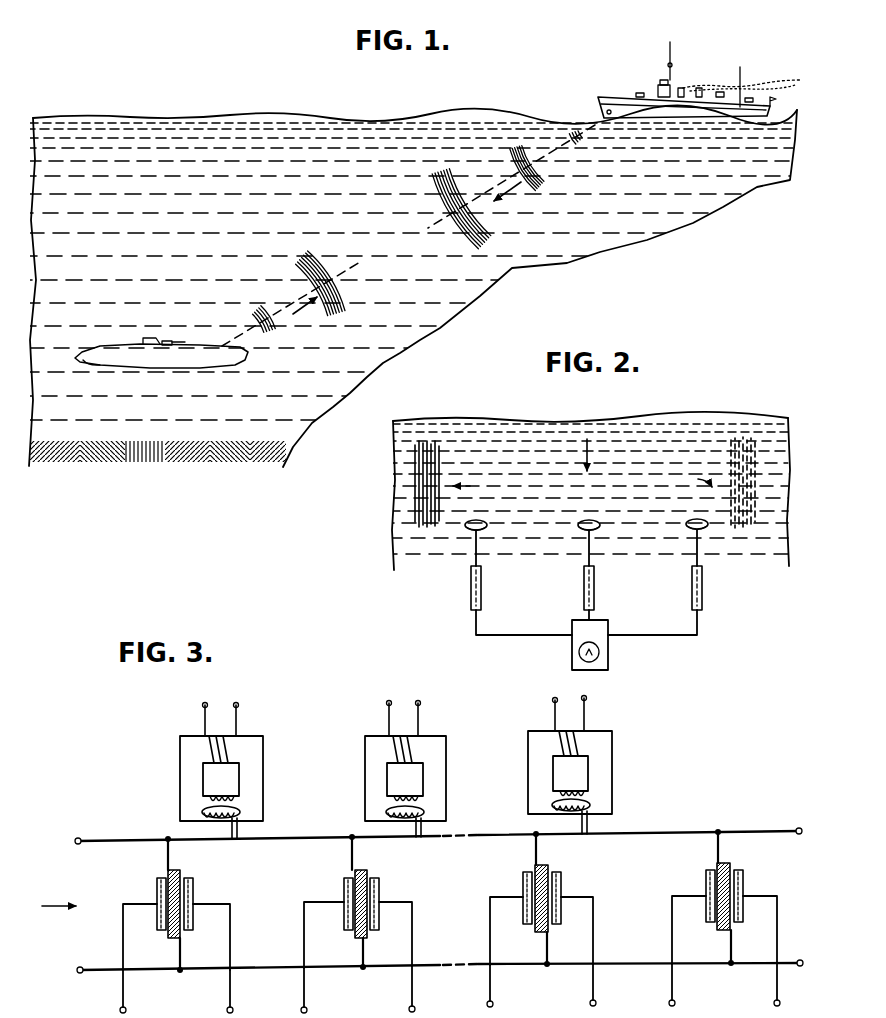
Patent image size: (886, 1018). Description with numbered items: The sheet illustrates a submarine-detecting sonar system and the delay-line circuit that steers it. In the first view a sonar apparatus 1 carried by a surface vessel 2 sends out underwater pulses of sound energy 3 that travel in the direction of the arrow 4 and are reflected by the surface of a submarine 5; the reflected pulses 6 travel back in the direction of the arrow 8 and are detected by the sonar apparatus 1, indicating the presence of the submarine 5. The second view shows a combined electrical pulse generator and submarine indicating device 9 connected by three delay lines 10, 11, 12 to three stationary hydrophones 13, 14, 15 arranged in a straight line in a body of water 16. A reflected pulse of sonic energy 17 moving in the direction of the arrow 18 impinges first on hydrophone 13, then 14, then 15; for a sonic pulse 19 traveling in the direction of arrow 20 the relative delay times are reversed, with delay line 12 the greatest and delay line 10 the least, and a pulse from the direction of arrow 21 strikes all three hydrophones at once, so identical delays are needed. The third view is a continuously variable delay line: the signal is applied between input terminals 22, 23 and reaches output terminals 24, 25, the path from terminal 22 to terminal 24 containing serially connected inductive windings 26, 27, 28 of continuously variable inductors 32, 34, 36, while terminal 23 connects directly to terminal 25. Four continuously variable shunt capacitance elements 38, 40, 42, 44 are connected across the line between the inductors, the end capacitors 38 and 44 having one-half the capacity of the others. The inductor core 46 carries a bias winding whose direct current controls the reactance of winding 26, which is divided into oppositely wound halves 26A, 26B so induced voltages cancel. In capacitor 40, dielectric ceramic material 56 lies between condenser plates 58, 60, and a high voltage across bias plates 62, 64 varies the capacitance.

In FIG. 1, the sonar apparatus 1 is at (598, 112).
In FIG. 1, the surface vessel 2 is at (660, 89).
In FIG. 1, the pulses of sound energy 3 is at (590, 142).
In FIG. 1, the arrow 4 is at (503, 200).
In FIG. 1, the submarine 5 is at (191, 366).
In FIG. 1, the reflected pulses 6 is at (309, 267).
In FIG. 1, the arrow 8 is at (296, 314).
In FIG. 2, the combined electrical pulse generator and submarine indicating device 9 is at (572, 656).
In FIG. 2, the delay line 10 is at (471, 592).
In FIG. 2, the delay line 11 is at (584, 592).
In FIG. 2, the delay line 12 is at (692, 590).
In FIG. 2, the hydrophone 13 is at (483, 520).
In FIG. 2, the hydrophone 14 is at (592, 519).
In FIG. 2, the hydrophone 15 is at (698, 518).
In FIG. 2, the body of water 16 is at (647, 418).
In FIG. 2, the reflected pulse of sonic energy 17 is at (444, 458).
In FIG. 2, the arrow 18 is at (475, 486).
In FIG. 2, the sonic pulse 19 is at (728, 456).
In FIG. 2, the arrow 20 is at (692, 479).
In FIG. 2, the arrow 21 is at (582, 452).
In FIG. 3, the input terminal 22 is at (79, 838).
In FIG. 3, the input terminal 23 is at (79, 968).
In FIG. 3, the output terminal 24 is at (799, 828).
In FIG. 3, the output terminal 25 is at (799, 960).
In FIG. 3, the inductive winding 26 is at (227, 806).
In FIG. 3, the winding part 26A is at (228, 798).
In FIG. 3, the winding part 26B is at (243, 815).
In FIG. 3, the inductive winding 27 is at (380, 806).
In FIG. 3, the inductive winding 28 is at (546, 803).
In FIG. 3, the continuously variable inductor 32 is at (224, 771).
In FIG. 3, the continuously variable inductor 34 is at (390, 769).
In FIG. 3, the continuously variable inductor 36 is at (556, 765).
In FIG. 3, the continuously variable shunt capacitance element 38 is at (171, 926).
In FIG. 3, the continuously variable shunt capacitance element 40 is at (340, 884).
In FIG. 3, the continuously variable shunt capacitance element 42 is at (521, 881).
In FIG. 3, the continuously variable shunt capacitance element 44 is at (704, 879).
In FIG. 3, the inductor core 46 is at (180, 777).
In FIG. 3, the dielectric ceramic material 56 is at (177, 871).
In FIG. 3, the condenser plate 58 is at (163, 878).
In FIG. 3, the condenser plate 60 is at (181, 937).
In FIG. 3, the bias plate 62 is at (157, 922).
In FIG. 3, the bias plate 64 is at (195, 891).